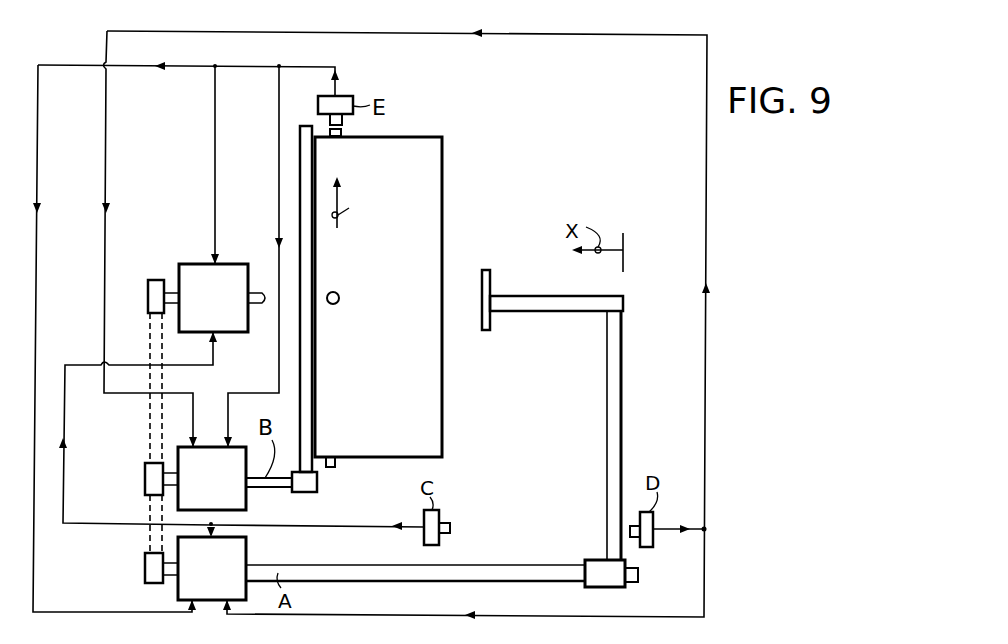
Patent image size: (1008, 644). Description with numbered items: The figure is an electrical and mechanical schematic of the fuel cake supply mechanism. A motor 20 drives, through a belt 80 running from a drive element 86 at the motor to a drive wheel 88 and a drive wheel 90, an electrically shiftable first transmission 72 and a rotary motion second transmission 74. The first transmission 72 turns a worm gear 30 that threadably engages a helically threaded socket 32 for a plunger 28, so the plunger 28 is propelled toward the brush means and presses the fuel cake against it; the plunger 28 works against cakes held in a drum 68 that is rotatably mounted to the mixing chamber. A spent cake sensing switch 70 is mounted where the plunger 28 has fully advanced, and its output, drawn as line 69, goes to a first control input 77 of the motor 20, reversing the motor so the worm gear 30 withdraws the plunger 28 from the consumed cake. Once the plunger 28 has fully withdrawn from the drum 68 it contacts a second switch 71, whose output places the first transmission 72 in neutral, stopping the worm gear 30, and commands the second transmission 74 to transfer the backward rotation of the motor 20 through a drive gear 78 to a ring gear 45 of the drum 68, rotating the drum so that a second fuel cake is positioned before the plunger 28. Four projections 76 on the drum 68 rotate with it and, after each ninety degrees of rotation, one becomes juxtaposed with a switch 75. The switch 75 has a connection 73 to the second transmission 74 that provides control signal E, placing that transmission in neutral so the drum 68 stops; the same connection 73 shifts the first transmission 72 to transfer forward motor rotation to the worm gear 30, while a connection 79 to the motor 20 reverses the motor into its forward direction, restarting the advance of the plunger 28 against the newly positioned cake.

The motor 20 is at (228, 304).
The plunger 28 is at (490, 320).
The worm gear 30 is at (372, 575).
The helically threaded socket 32 is at (600, 587).
The ring gear 45 is at (312, 365).
The drum 68 is at (427, 408).
The signal line 69 is at (353, 526).
The switch 70 is at (442, 512).
The second switch 71 is at (655, 545).
The electrically shiftable transmission 72 is at (227, 580).
The connection 73 is at (279, 70).
The rotary motion transmission 74 is at (227, 490).
The switch 75 is at (346, 96).
The projections 76 is at (345, 133).
The first control input 77 is at (95, 525).
The drive gear 78 is at (305, 495).
The connection 79 is at (215, 125).
The belt 80 is at (150, 426).
The coupling element 86 is at (153, 280).
The drive wheel 88 is at (145, 564).
The drive wheel 90 is at (145, 473).